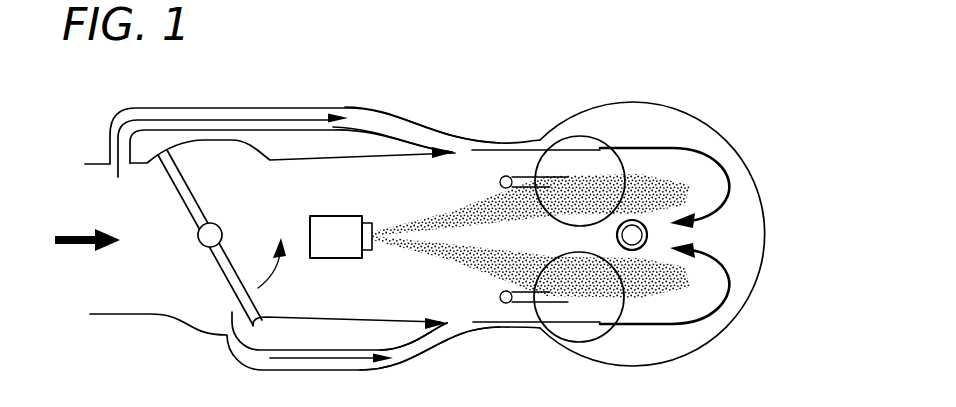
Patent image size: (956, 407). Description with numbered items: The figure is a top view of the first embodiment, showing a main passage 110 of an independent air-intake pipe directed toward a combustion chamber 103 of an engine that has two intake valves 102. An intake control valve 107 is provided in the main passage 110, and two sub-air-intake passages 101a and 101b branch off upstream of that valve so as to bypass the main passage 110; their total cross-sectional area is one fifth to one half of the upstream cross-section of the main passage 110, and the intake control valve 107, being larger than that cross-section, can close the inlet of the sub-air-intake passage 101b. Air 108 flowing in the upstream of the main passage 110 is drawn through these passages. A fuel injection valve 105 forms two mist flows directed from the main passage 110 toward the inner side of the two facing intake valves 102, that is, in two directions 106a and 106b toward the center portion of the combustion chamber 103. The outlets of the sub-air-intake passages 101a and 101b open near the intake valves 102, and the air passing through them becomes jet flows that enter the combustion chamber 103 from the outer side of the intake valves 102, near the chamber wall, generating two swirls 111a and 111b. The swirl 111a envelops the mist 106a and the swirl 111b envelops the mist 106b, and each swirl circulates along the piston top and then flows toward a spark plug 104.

The sub-air-intake passage 101a is at (418, 122).
The sub-air-intake passage 101b is at (447, 345).
The intake valve 102 is at (576, 152).
The combustion chamber 103 is at (696, 118).
The spark plug 104 is at (636, 236).
The fuel injection valve 105 is at (348, 255).
The mist flow direction 106a is at (677, 187).
The mist flow direction 106b is at (680, 283).
The intake control valve 107 is at (228, 278).
The air 108 is at (75, 263).
The main passage 110 is at (298, 160).
The swirl 111a is at (642, 146).
The swirl 111b is at (678, 327).